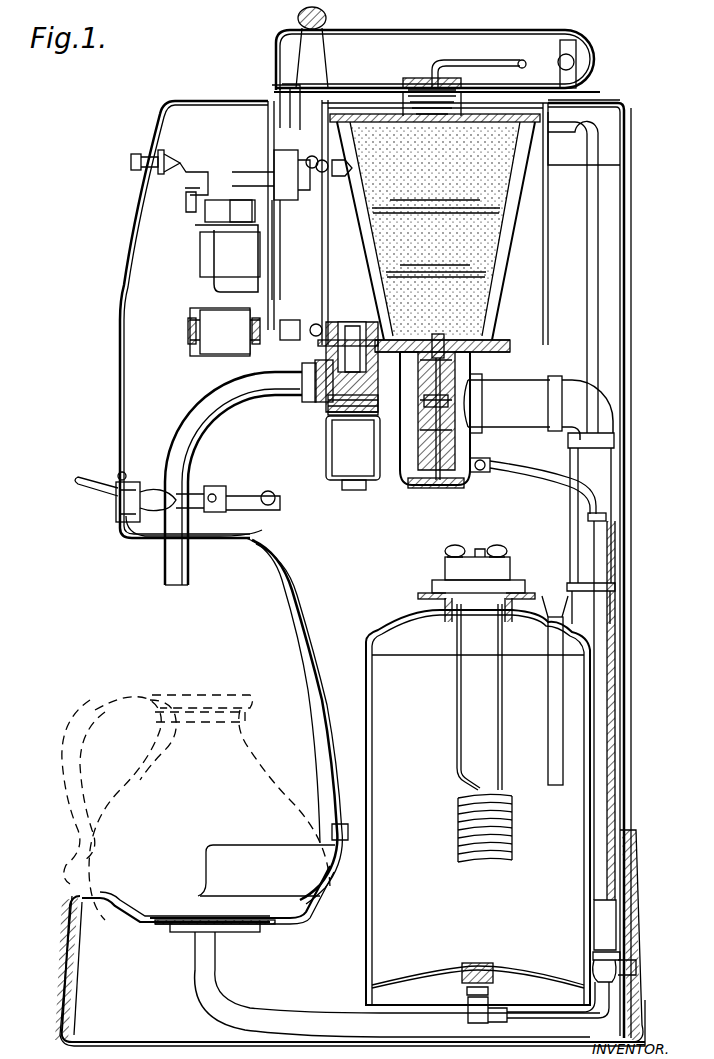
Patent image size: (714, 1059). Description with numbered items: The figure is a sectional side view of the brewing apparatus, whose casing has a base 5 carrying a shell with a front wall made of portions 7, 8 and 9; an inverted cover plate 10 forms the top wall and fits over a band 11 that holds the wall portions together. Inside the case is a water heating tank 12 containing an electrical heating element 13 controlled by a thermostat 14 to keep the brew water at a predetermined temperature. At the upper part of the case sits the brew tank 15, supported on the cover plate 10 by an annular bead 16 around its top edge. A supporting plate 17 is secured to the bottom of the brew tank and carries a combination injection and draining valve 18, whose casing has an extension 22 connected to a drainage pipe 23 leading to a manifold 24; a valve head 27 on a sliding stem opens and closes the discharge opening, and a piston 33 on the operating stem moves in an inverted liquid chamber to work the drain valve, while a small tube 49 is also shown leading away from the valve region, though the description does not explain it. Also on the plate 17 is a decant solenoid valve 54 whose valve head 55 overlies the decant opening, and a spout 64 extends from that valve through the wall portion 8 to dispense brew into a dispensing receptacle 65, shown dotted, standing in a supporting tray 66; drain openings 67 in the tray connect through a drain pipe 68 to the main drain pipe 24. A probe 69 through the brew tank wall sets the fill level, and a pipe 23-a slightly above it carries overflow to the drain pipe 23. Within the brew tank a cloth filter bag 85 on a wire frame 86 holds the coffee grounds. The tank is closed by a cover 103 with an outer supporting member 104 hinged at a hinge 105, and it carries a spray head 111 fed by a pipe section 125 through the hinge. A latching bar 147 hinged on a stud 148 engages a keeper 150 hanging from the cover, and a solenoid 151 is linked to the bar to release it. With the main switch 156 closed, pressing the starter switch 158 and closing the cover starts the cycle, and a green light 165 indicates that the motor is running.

The base 5 is at (70, 932).
The front wall portion 7 is at (120, 340).
The front wall portion 8 is at (130, 538).
The front wall portion 9 is at (316, 660).
The cover plate 10 is at (600, 103).
The band 11 is at (625, 110).
The water heating tank 12 is at (366, 782).
The electrical heating element 13 is at (450, 834).
The thermostat 14 is at (553, 754).
The brew tank 15 is at (542, 206).
The annular bead 16 is at (600, 84).
The supporting plate 17 is at (512, 348).
The combination injection and draining valve 18 is at (482, 485).
The extension 22 is at (492, 434).
The drainage pipe 23 is at (524, 392).
The overflow pipe 23-a is at (598, 312).
The manifold 24 is at (616, 616).
The valve head 27 is at (430, 340).
The piston 33 is at (420, 488).
The tube 49 is at (552, 490).
The decant solenoid valve 54 is at (319, 430).
The valve head 55 is at (348, 335).
The spout 64 is at (164, 578).
The dispensing receptacle 65 is at (80, 872).
The supporting tray 66 is at (128, 926).
The drain openings 67 is at (216, 918).
The drain pipe 68 is at (272, 1010).
The probe 69 is at (355, 160).
The cloth filter bag 85 is at (498, 282).
The wire frame 86 is at (486, 256).
The cover 103 is at (400, 32).
The outer supporting member 104 is at (296, 60).
The hinge 105 is at (582, 62).
The spray head 111 is at (396, 82).
The pipe section 125 is at (476, 54).
The latching bar 147 is at (278, 228).
The stud 148 is at (306, 330).
The keeper 150 is at (278, 96).
The solenoid 151 is at (272, 152).
The main switch 156 is at (100, 478).
The starter switch 158 is at (130, 162).
The green light 165 is at (148, 490).